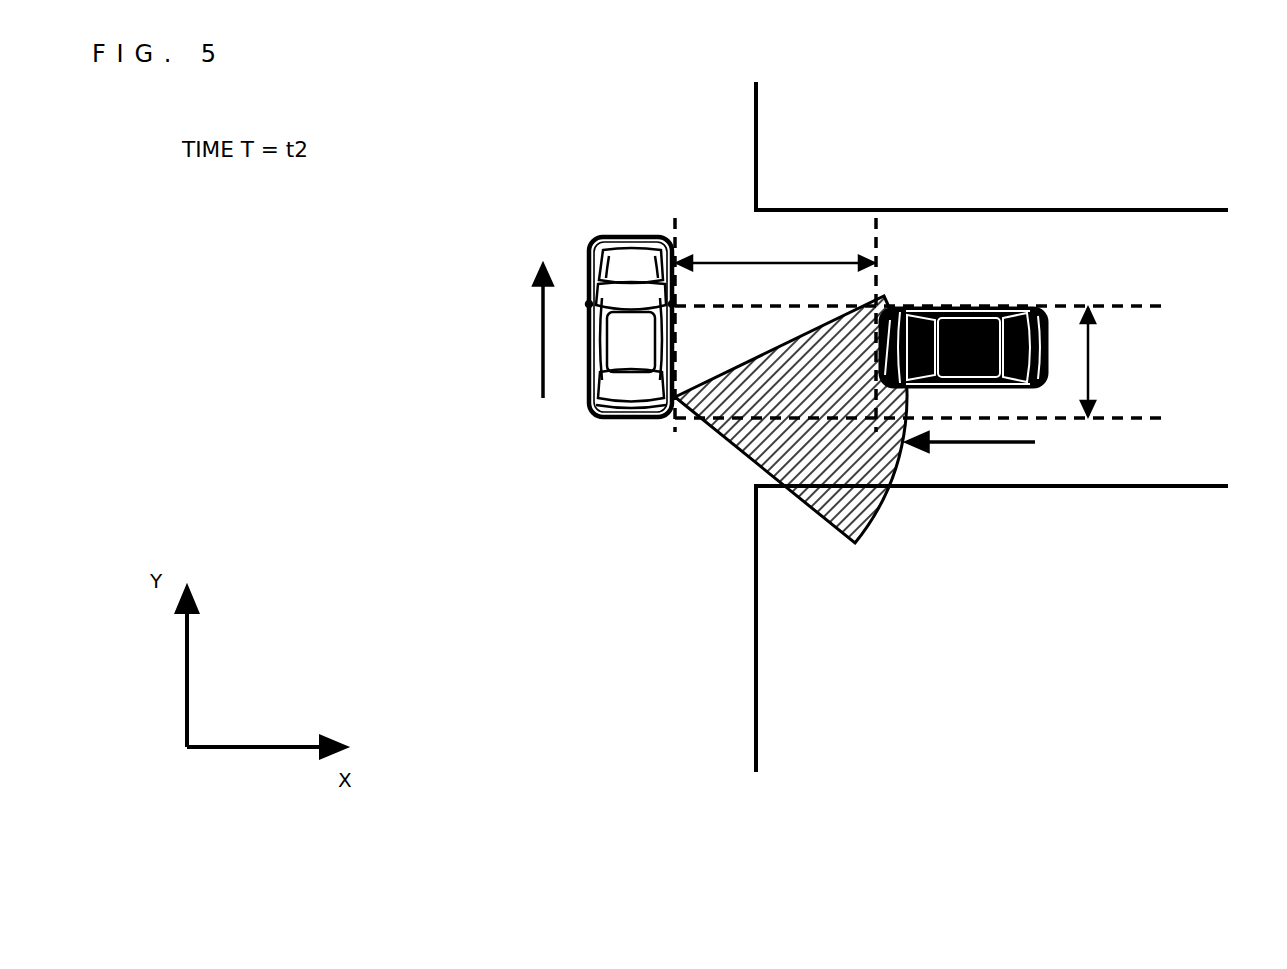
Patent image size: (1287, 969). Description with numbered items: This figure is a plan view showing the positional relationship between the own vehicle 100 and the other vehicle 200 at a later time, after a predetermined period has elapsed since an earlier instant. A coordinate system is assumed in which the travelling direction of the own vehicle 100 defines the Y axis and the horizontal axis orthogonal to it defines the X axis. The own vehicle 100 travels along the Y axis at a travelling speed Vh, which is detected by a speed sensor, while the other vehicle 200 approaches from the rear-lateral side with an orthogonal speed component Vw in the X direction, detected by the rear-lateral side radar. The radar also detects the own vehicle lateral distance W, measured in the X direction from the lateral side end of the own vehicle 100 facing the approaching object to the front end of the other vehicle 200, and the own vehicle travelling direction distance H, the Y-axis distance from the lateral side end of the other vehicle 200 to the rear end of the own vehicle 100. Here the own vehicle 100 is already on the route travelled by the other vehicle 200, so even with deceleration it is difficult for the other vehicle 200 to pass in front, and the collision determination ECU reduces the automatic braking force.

The own vehicle 100 is at (632, 420).
The other vehicle 200 is at (1040, 308).
The own vehicle lateral distance W is at (775, 254).
The own vehicle travelling direction distance H is at (1098, 362).
The travelling speed Vh is at (527, 331).
The orthogonal speed component Vw is at (971, 456).